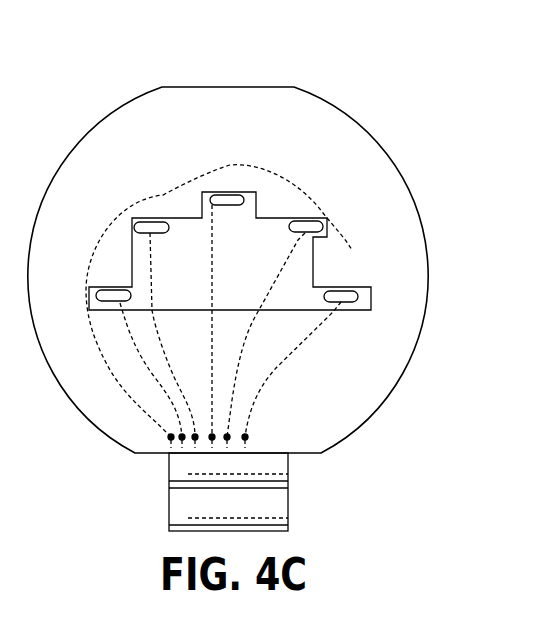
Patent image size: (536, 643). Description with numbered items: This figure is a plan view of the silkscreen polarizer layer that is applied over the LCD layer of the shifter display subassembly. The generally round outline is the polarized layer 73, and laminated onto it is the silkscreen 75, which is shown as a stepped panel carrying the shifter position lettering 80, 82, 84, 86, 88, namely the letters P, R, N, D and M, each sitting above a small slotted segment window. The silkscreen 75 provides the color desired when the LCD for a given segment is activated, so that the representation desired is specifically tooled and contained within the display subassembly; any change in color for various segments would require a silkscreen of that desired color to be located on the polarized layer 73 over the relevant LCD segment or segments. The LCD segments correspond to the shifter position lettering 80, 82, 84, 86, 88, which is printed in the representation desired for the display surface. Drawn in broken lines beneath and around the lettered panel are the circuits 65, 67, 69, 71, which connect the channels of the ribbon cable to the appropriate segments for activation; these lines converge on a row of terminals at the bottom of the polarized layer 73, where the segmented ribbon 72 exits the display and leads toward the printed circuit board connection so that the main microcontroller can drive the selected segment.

The circuit 65 is at (171, 437).
The circuit 67 is at (153, 375).
The circuit 69 is at (152, 320).
The circuit 71 is at (212, 332).
The segmented ribbon 72 is at (185, 505).
The polarized layer 73 is at (339, 136).
The silkscreen 75 is at (296, 302).
The shifter position lettering 80 is at (108, 246).
The shifter position lettering 82 is at (152, 175).
The shifter position lettering 84 is at (218, 154).
The shifter position lettering 86 is at (300, 176).
The shifter position lettering 88 is at (351, 245).